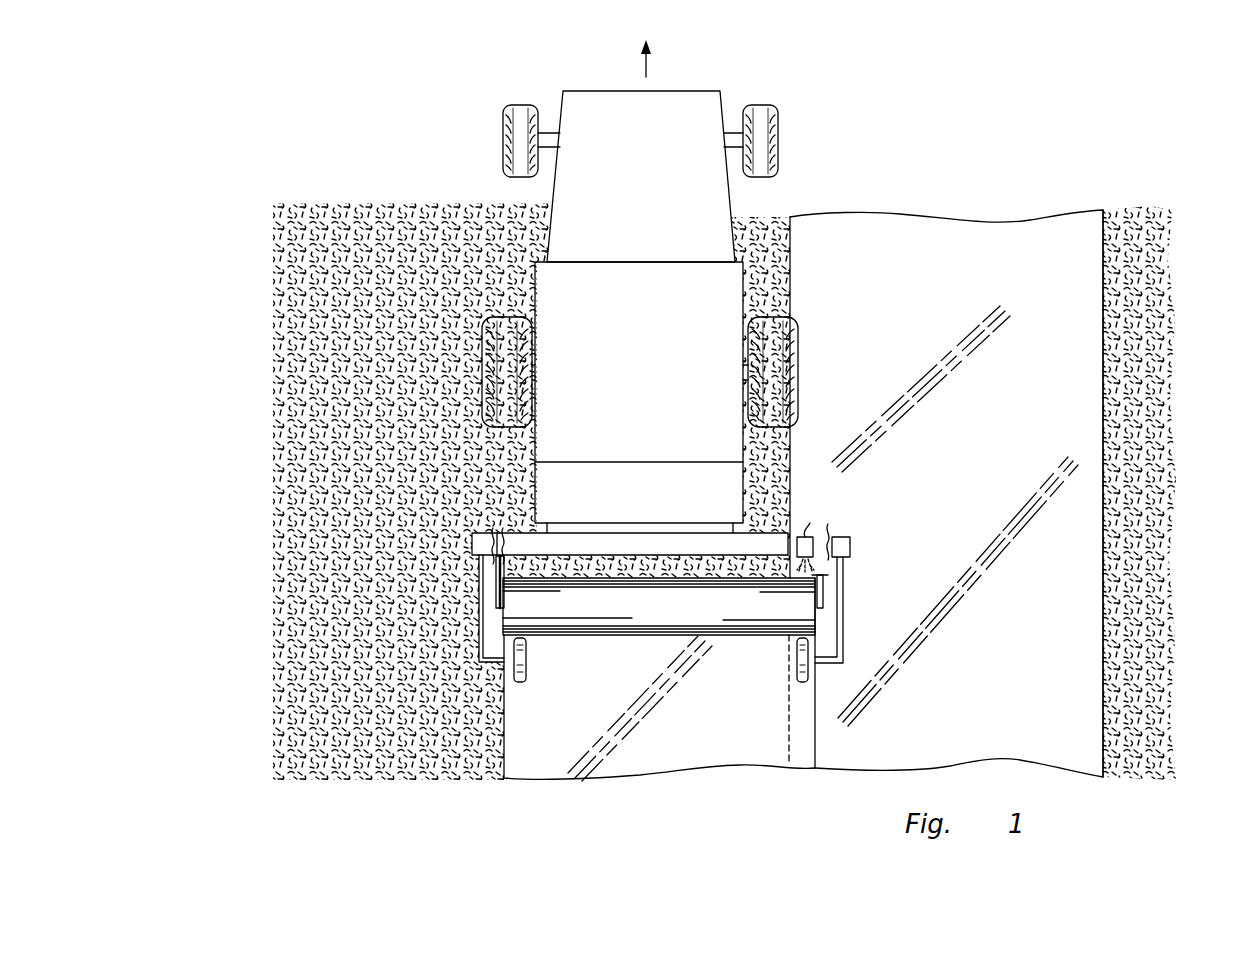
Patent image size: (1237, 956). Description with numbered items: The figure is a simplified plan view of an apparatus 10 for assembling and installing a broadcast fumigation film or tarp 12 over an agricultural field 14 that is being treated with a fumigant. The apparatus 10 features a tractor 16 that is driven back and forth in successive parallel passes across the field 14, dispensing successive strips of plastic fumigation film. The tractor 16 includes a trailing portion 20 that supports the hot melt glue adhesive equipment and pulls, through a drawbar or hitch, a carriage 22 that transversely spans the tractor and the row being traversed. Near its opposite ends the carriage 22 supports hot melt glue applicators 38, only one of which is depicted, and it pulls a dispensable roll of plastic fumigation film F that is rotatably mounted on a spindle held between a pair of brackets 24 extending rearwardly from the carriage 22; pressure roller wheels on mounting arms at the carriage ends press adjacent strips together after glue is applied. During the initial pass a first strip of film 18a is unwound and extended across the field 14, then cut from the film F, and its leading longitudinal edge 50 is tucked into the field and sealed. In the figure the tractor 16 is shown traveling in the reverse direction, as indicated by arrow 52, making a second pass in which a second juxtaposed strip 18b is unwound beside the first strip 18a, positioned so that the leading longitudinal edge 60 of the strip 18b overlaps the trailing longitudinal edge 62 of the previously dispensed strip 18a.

The apparatus 10 is at (478, 113).
The broadcast fumigation film or tarp 12 is at (862, 206).
The agricultural field 14 is at (353, 297).
The tractor 16 is at (610, 90).
The first strip of film 18a is at (1050, 215).
The second strip of film 18b is at (750, 737).
The trailing portion 20 is at (748, 478).
The carriage 22 is at (513, 538).
The brackets 24 is at (500, 588).
The hot melt glue applicator 38 is at (810, 528).
The leading longitudinal edge 50 is at (1103, 470).
The arrow 52 is at (646, 67).
The leading longitudinal edge of strip 18b 60 is at (815, 748).
The trailing longitudinal edge 62 is at (790, 236).
The film roll F is at (676, 595).